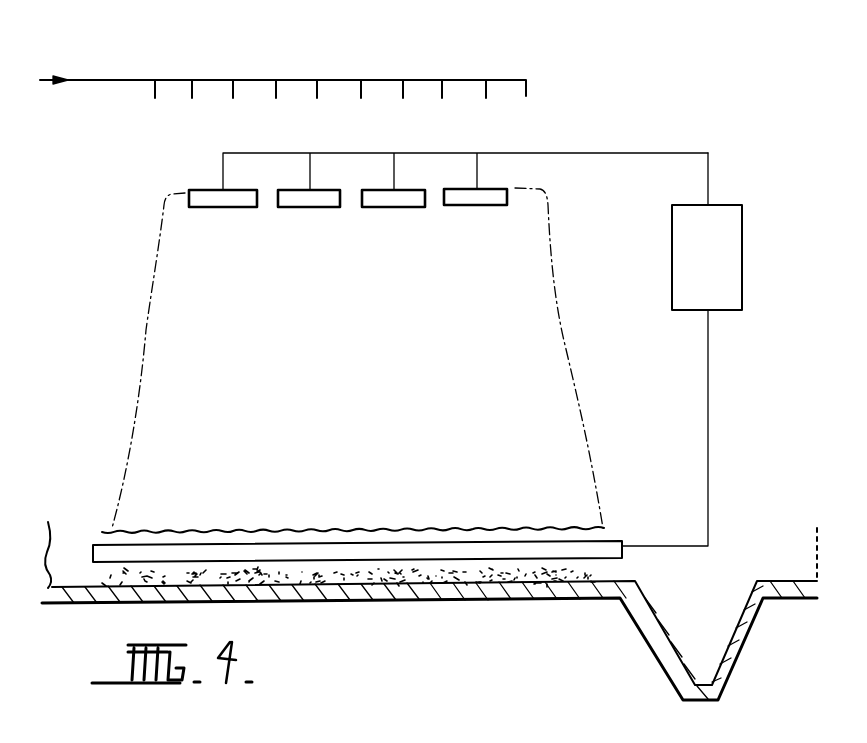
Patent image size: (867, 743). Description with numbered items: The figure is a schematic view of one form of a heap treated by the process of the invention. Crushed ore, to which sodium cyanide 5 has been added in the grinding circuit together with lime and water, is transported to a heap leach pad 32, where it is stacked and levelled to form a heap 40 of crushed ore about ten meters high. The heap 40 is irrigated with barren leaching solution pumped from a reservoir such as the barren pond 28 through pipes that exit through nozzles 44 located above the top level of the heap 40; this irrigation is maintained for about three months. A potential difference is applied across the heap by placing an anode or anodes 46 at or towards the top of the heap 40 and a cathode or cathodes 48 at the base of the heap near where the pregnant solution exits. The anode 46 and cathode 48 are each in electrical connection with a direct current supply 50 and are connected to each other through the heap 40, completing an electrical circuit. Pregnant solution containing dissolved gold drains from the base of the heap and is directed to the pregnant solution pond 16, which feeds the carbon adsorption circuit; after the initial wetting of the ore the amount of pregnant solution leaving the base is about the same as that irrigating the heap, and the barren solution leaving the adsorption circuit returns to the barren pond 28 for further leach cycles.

The barren pond 28 is at (280, 69).
The sodium cyanide 5 is at (245, 74).
The nozzles 44 is at (276, 90).
The anode 46 is at (495, 180).
The direct current supply 50 is at (688, 229).
The heap leach pad 32 is at (130, 298).
The heap 40 is at (400, 378).
The cathode 48 is at (270, 556).
The pregnant solution pond 16 is at (707, 634).